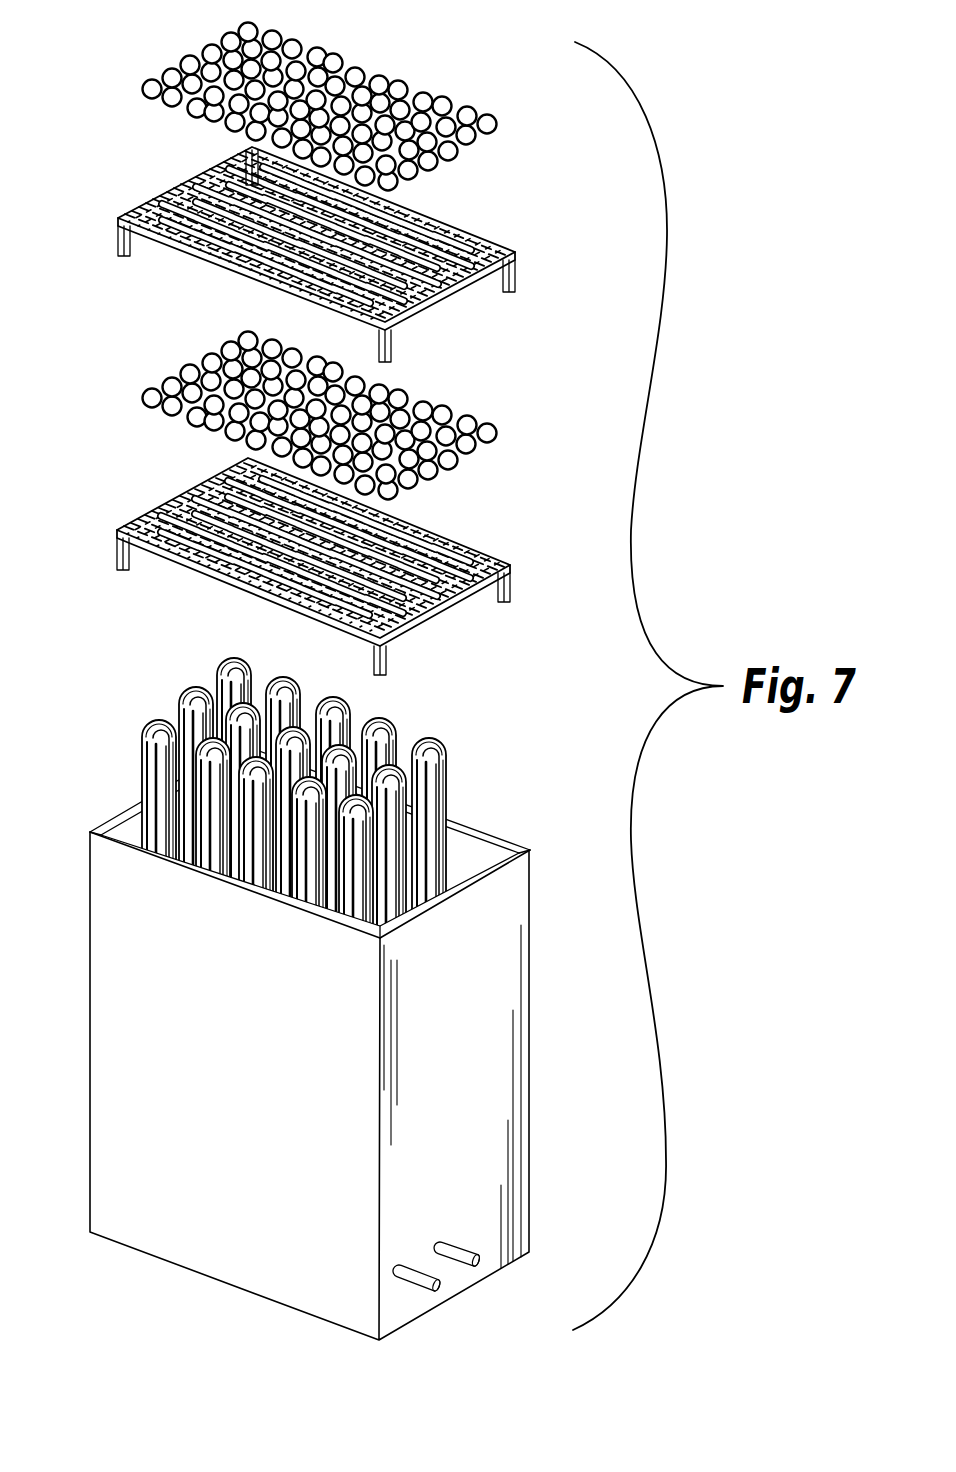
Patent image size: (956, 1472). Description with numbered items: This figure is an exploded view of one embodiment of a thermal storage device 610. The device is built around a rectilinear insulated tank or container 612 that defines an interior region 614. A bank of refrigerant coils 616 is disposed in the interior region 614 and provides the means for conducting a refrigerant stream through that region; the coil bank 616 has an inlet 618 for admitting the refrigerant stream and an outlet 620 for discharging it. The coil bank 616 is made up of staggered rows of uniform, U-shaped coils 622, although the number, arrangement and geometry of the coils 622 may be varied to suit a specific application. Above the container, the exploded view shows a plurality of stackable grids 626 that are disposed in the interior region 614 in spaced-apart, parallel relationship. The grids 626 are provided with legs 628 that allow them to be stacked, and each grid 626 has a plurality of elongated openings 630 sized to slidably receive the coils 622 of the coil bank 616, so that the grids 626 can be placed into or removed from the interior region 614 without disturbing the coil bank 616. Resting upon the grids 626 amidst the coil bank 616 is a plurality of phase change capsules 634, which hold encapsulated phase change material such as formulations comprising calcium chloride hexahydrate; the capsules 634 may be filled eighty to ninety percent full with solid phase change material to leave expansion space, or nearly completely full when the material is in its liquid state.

The thermal storage device 610 is at (162, 51).
The insulated tank or container 612 is at (290, 999).
The interior region 614 is at (467, 856).
The bank of refrigerant coils 616 is at (320, 876).
The inlet 618 is at (412, 1269).
The outlet 620 is at (456, 1248).
The coils 622 is at (186, 700).
The stackable grids 626 is at (338, 396).
The legs 628 is at (240, 170).
The elongated openings 630 is at (482, 246).
The phase change capsules 634 is at (452, 80).